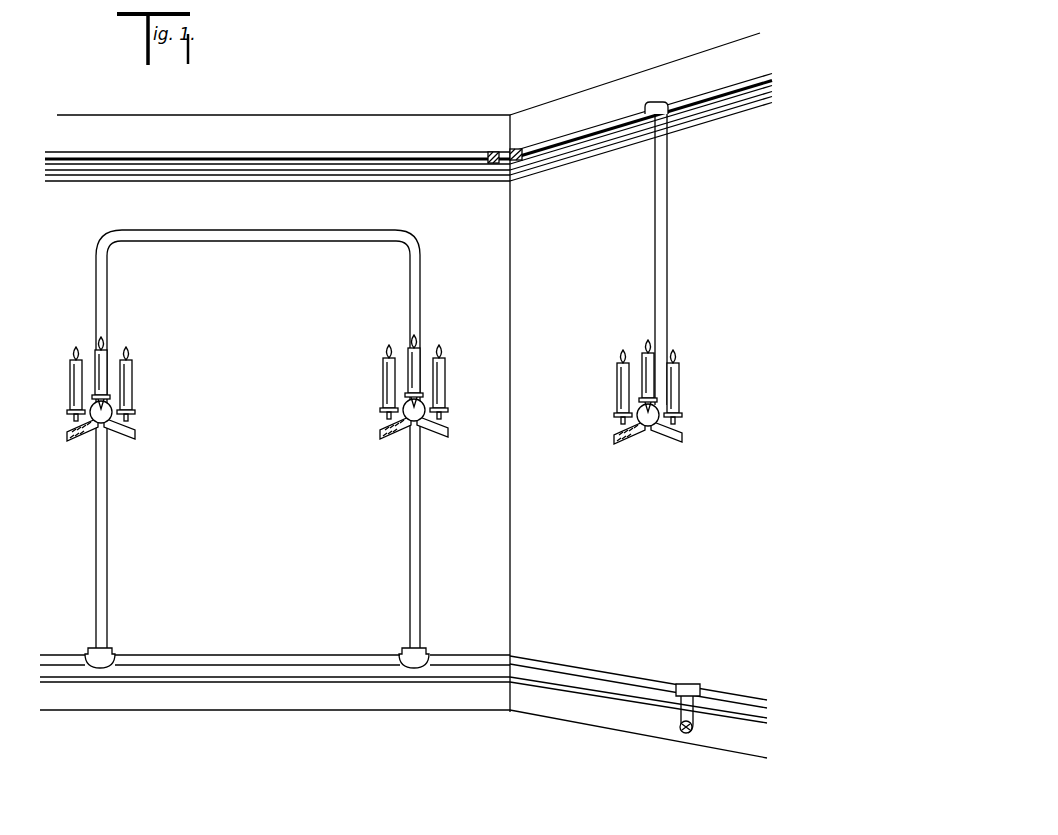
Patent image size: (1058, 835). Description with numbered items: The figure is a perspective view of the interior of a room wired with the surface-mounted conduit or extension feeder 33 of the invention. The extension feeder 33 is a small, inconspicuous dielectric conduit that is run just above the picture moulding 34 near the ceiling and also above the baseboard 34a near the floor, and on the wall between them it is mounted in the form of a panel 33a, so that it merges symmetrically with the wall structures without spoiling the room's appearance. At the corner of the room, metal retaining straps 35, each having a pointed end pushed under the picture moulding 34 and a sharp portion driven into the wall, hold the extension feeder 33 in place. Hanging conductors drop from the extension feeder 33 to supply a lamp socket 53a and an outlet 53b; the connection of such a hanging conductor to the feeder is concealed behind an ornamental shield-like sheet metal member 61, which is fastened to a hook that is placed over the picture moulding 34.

The conduit or extension feeder 33 is at (405, 391).
The panel 33a is at (92, 243).
The picture moulding 34 is at (167, 173).
The baseboard 34a is at (155, 700).
The metal retaining strap 35 is at (492, 153).
The lamp socket 53a is at (645, 432).
The outlet 53b is at (680, 729).
The shield-like sheet metal member 61 is at (656, 105).